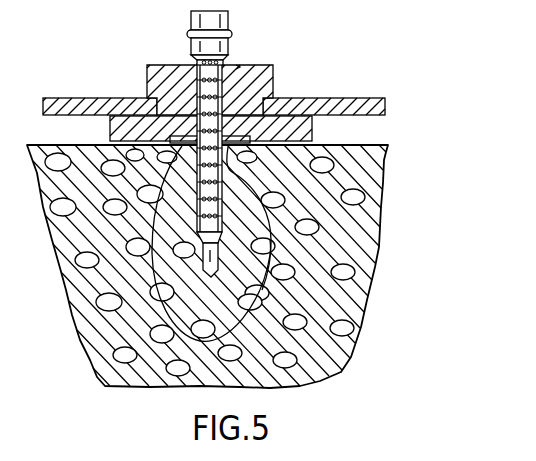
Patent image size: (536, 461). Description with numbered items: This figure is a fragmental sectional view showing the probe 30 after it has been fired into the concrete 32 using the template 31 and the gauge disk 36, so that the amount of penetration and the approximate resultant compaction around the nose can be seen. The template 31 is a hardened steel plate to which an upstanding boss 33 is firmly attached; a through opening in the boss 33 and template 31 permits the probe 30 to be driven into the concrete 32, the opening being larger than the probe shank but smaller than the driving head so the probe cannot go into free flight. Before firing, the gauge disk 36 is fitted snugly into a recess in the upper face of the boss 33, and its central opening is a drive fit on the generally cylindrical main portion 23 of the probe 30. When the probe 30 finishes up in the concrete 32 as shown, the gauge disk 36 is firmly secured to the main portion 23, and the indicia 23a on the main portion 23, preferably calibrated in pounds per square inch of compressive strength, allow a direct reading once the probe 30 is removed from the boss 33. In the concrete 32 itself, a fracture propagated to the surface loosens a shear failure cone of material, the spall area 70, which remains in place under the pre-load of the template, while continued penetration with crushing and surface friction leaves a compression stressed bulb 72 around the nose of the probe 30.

The main portion 23 is at (207, 90).
The indicia 23a is at (145, 146).
The probe 30 is at (229, 59).
The template 31 is at (321, 103).
The concrete 32 is at (378, 189).
The boss 33 is at (258, 84).
The gauge disk 36 is at (238, 65).
The shear failure cone 70 is at (255, 188).
The compression stressed bulb 72 is at (270, 259).